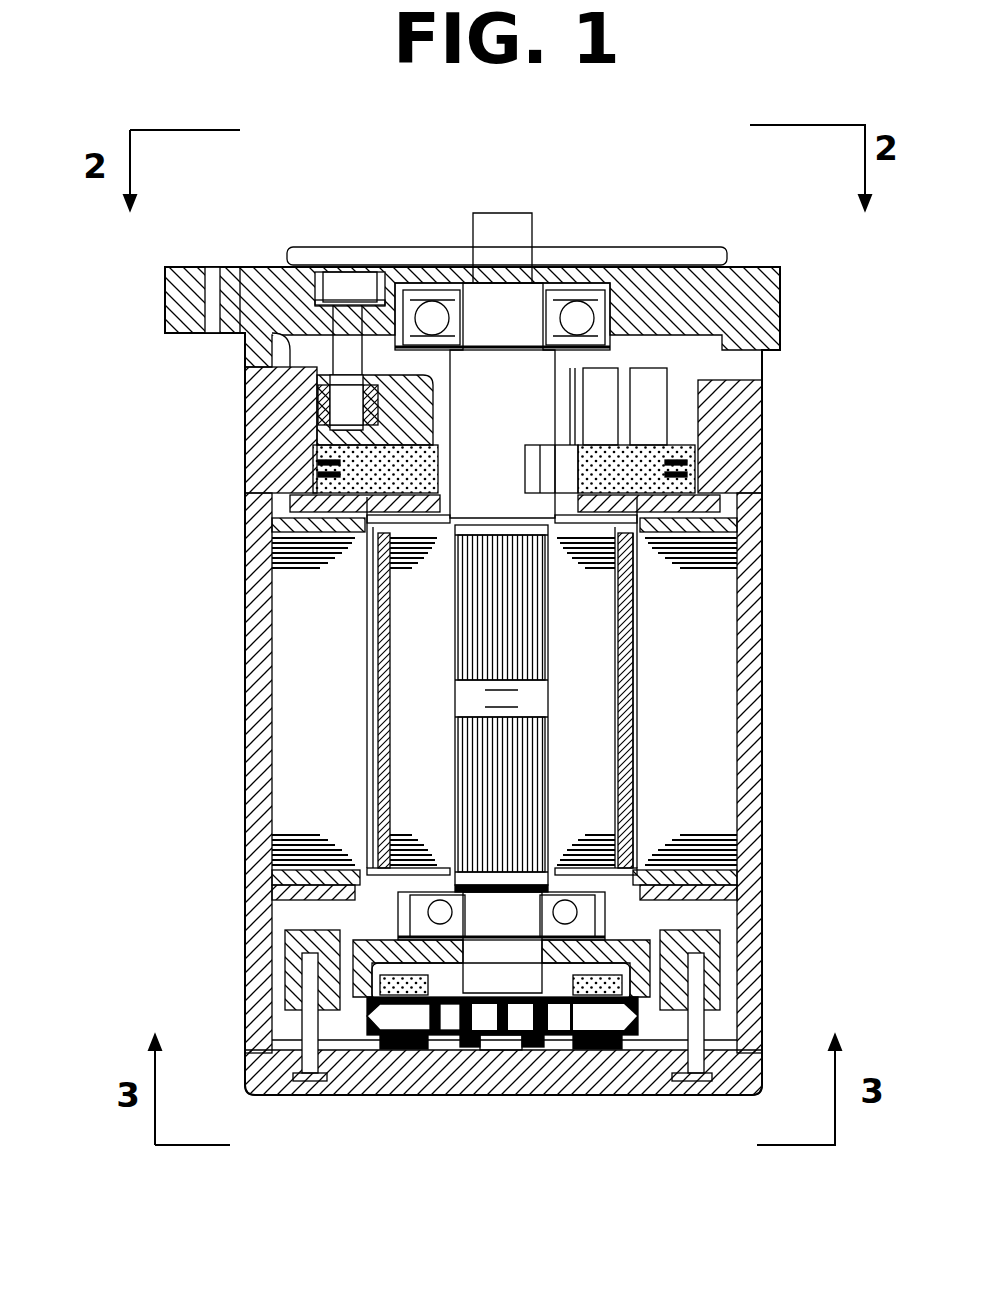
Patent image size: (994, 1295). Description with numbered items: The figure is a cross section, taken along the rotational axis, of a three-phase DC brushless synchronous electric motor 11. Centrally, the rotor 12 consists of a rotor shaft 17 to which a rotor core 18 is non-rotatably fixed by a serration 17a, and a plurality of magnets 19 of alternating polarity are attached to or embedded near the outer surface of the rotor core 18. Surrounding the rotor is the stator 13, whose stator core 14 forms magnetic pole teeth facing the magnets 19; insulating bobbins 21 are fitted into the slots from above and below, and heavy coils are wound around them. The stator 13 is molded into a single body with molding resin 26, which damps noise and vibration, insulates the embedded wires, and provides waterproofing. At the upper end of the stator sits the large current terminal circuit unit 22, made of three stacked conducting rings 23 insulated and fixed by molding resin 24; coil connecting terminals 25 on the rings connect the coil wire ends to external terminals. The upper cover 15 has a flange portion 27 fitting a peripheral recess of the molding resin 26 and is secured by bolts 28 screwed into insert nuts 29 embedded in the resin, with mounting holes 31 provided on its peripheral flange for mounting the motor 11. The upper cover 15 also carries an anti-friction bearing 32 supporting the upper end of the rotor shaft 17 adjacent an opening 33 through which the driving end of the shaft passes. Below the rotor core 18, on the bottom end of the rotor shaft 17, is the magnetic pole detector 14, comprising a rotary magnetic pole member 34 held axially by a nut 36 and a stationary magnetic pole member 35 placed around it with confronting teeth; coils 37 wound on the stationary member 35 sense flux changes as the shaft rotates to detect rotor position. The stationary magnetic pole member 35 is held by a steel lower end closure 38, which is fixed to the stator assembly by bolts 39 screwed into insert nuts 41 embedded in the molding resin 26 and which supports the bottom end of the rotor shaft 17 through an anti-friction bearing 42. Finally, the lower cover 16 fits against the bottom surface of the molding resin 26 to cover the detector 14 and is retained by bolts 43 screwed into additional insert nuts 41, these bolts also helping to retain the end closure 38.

The electric motor 11 is at (768, 218).
The rotor 12 is at (610, 598).
The stator 13 is at (720, 668).
The magnetic pole detector 14 is at (715, 619).
The upper cover 15 is at (762, 298).
The lower cover 16 is at (680, 1075).
The rotor shaft 17 is at (518, 243).
The serration 17a is at (525, 785).
The rotor core 18 is at (575, 790).
The magnets 19 is at (630, 800).
The insulating bobbins 21 is at (745, 493).
The large current terminal circuit unit 22 is at (690, 412).
The conducting rings 23 is at (330, 455).
The molding resin 24 is at (390, 452).
The coil connecting terminals 25 is at (647, 385).
The molding resin 26 is at (750, 690).
The flange portion 27 is at (245, 372).
The bolts 28 is at (362, 272).
The insert nuts 29 is at (318, 410).
The mounting holes 31 is at (228, 290).
The anti-friction bearing 32 is at (590, 300).
The opening 33 is at (430, 268).
The rotary magnetic pole member 34 is at (445, 1050).
The stationary magnetic pole member 35 is at (400, 1040).
The nut 36 is at (492, 1060).
The coils 37 is at (415, 1050).
The lower end closure 38 is at (600, 960).
The bolts 39 is at (727, 1078).
The insert nuts 41 is at (300, 945).
The anti-friction bearing 42 is at (740, 890).
The bolts 43 is at (300, 1082).